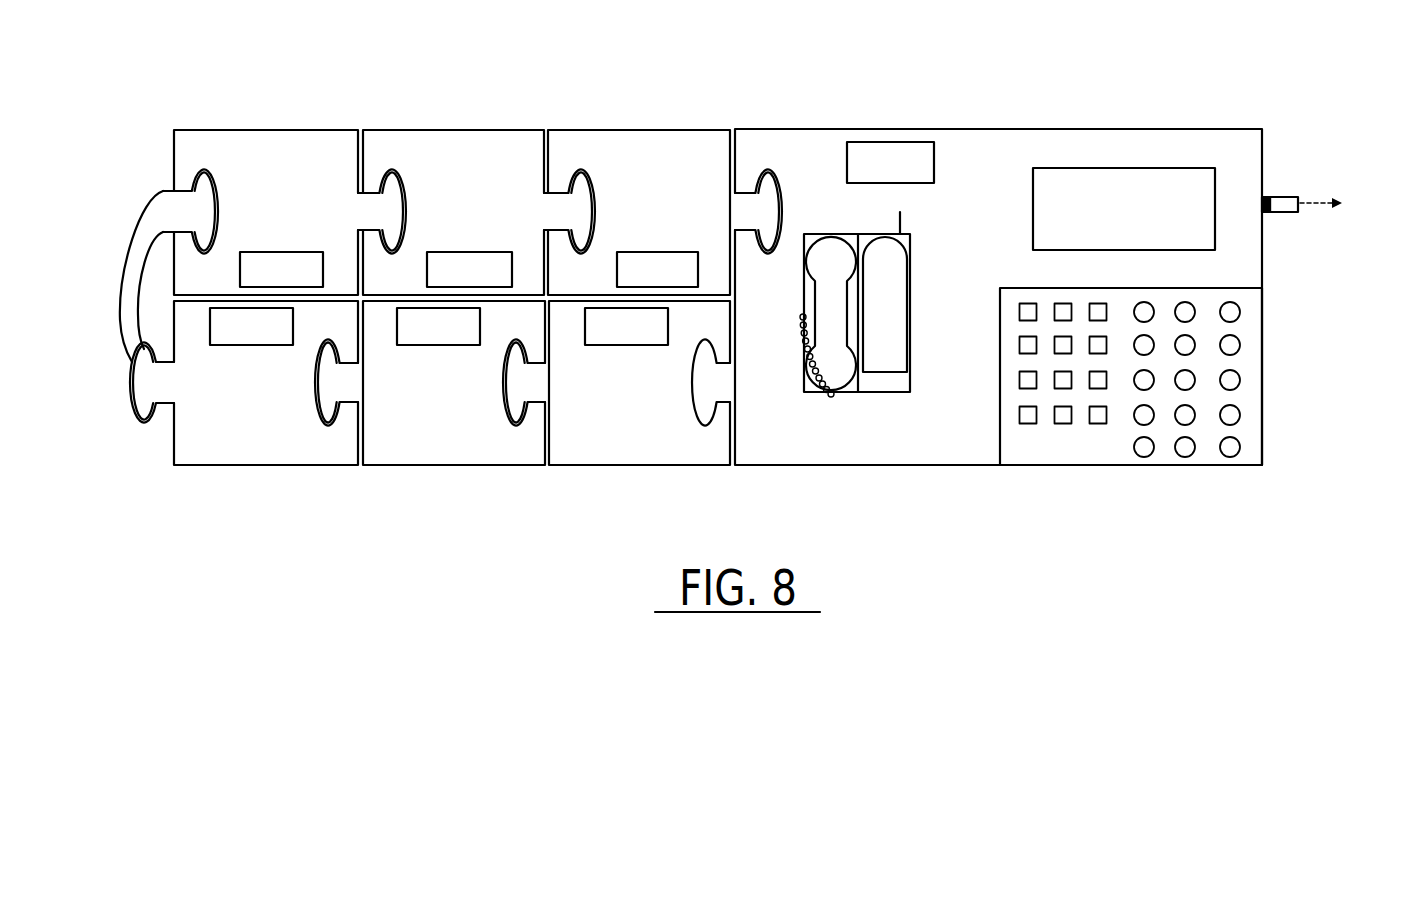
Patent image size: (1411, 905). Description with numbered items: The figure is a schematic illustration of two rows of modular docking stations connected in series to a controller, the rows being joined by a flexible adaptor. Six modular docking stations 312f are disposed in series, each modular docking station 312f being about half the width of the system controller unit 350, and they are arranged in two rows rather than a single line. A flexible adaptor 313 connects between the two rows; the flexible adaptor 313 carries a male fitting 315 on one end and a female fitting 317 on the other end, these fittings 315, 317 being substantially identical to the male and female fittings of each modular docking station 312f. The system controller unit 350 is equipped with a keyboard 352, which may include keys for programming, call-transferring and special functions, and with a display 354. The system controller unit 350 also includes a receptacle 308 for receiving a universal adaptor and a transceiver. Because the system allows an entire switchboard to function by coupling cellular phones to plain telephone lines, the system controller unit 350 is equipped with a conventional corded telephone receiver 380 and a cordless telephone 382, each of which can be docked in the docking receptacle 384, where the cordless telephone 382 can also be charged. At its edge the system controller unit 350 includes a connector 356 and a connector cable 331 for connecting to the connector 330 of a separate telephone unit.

The receptacle 308 is at (877, 155).
The modular docking station 312f is at (576, 484).
The flexible adaptor 313 is at (131, 297).
The male fitting 315 is at (202, 197).
The female fitting 317 is at (143, 427).
The connector 330 is at (1345, 203).
The connector cable 331 is at (1282, 208).
The system controller unit 350 is at (895, 455).
The keyboard 352 is at (1085, 455).
The display 354 is at (1125, 190).
The connector 356 is at (1265, 212).
The conventional telephone receiver 380 is at (827, 368).
The cordless telephone 382 is at (882, 300).
The docking receptacle 384 is at (887, 382).